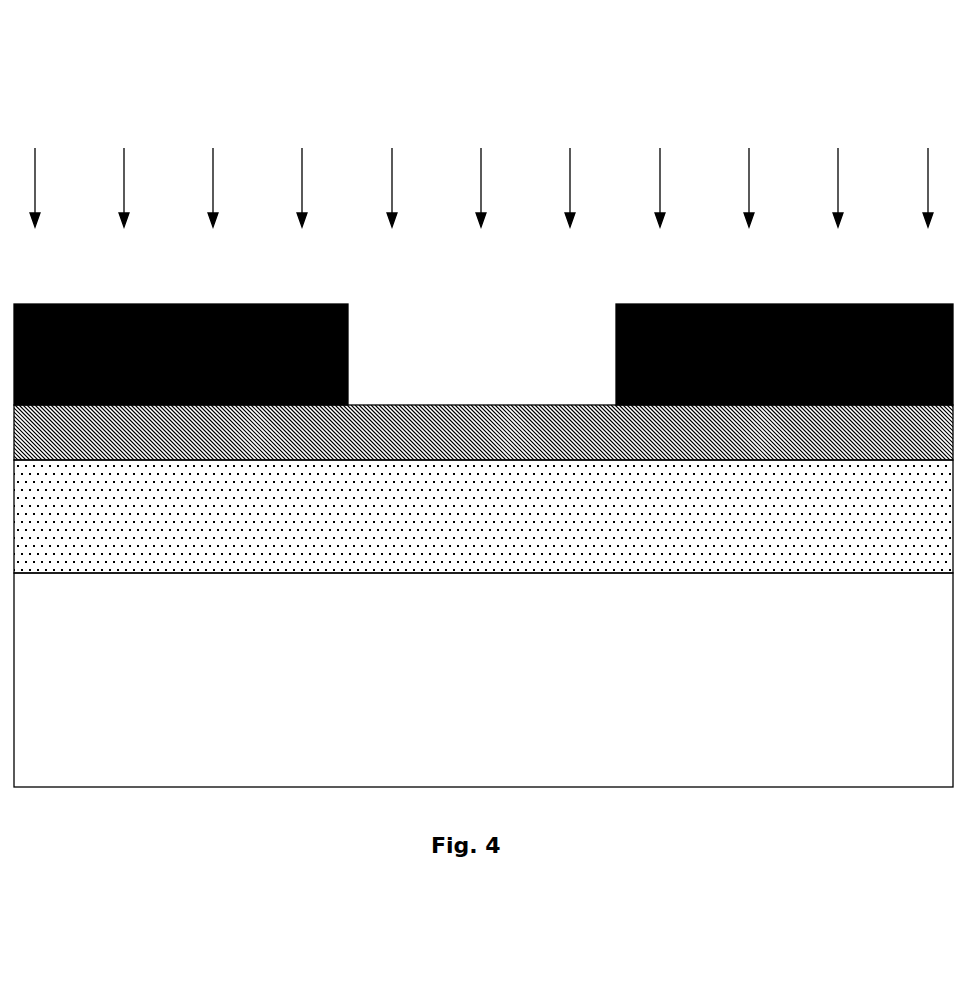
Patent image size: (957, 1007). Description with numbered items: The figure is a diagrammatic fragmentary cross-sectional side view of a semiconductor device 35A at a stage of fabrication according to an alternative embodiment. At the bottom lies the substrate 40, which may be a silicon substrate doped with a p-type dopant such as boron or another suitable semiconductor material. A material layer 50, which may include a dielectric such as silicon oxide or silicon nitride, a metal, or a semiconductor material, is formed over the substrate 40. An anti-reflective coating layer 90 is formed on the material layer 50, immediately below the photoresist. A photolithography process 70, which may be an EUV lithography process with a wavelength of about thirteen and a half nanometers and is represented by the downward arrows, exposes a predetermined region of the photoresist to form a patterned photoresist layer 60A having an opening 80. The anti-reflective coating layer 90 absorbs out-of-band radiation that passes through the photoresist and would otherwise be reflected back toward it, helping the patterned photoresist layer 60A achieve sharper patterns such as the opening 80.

The semiconductor device 35A is at (806, 86).
The photolithography process 70 is at (572, 165).
The opening 80 is at (470, 310).
The patterned photoresist layer 60A is at (207, 373).
The anti-reflective coating (ARC) layer 90 is at (493, 452).
The material layer 50 is at (494, 531).
The substrate 40 is at (495, 698).